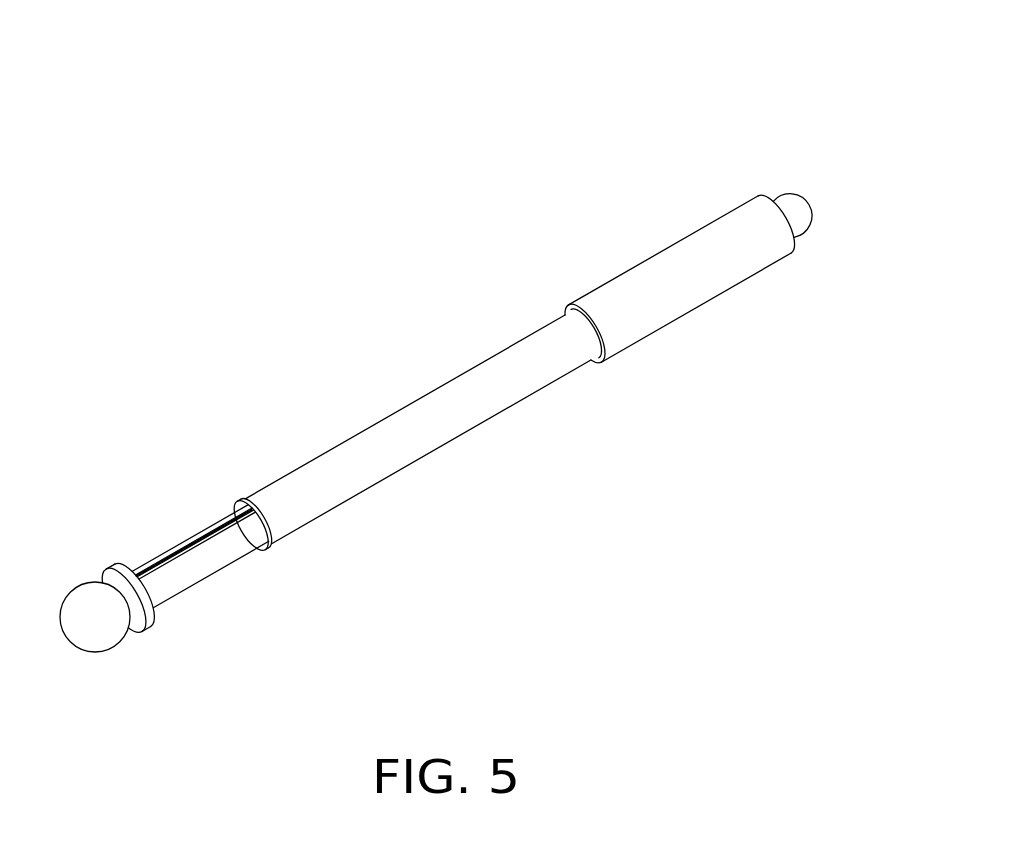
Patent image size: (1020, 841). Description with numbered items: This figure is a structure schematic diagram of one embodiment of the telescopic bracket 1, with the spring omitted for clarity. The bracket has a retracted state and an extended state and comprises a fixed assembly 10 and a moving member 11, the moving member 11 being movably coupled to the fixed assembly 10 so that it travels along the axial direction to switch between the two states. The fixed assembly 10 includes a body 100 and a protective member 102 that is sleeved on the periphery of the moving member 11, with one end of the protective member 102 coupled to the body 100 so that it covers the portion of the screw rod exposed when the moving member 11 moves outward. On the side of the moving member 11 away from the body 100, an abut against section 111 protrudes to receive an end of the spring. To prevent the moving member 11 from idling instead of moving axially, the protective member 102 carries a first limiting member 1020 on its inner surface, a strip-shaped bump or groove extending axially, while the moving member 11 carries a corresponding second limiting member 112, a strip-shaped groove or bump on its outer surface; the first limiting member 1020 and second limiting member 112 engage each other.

The telescopic bracket 1 is at (738, 82).
The fixed assembly 10 is at (662, 222).
The body 100 is at (658, 330).
The protective member 102 is at (410, 403).
The first limiting member 1020 is at (250, 517).
The moving member 11 is at (160, 553).
The abut against section 111 is at (143, 620).
The second limiting member 112 is at (213, 535).